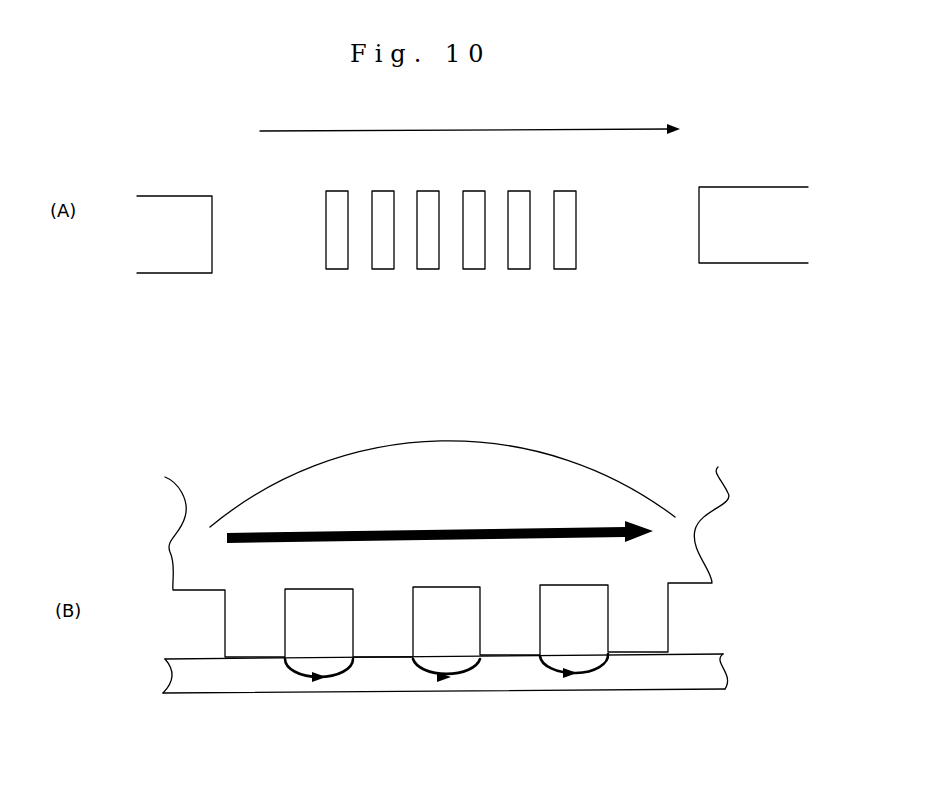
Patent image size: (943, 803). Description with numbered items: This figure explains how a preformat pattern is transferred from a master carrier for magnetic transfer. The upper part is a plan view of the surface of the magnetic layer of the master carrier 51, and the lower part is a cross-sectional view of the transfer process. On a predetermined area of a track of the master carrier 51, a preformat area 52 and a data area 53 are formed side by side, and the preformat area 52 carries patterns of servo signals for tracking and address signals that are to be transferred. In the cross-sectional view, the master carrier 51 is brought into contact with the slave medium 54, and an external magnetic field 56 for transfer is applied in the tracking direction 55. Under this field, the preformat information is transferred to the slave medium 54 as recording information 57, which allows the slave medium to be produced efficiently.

The master carrier for magnetic transfer 51 is at (186, 177).
The preformat area 52 is at (597, 272).
The data area 53 is at (710, 210).
The slave medium 54 is at (712, 675).
The tracking direction 55 is at (484, 125).
The external magnetic field for transfer 56 is at (613, 523).
The recording information 57 is at (442, 673).